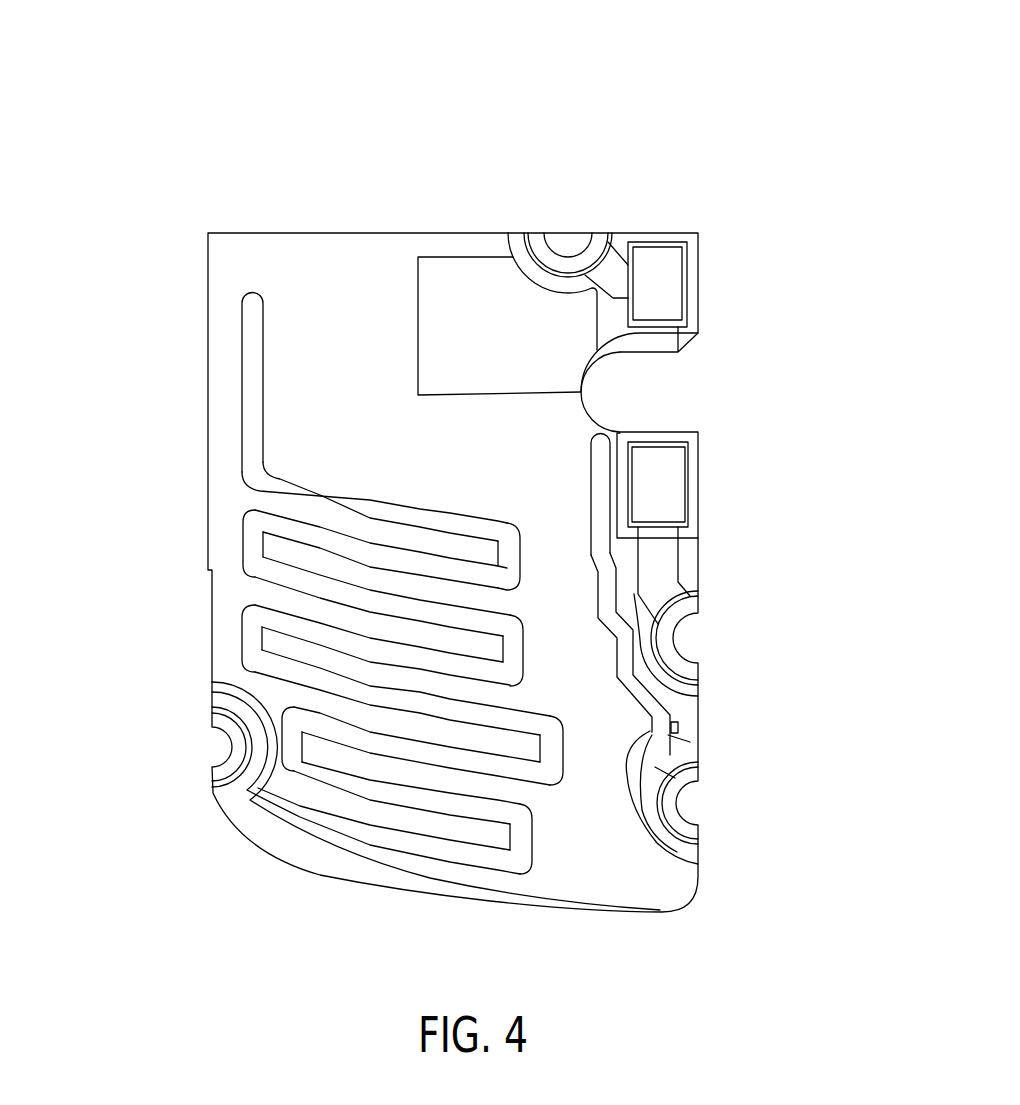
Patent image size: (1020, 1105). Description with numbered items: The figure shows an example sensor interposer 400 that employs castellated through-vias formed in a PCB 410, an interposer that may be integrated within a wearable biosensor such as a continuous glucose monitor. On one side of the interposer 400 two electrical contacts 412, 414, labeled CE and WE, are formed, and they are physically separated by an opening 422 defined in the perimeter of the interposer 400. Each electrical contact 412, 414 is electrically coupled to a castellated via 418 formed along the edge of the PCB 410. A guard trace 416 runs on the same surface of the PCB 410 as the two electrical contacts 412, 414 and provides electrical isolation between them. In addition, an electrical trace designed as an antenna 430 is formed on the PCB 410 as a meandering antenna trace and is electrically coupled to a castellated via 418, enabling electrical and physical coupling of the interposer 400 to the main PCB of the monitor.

The sensor interposer 400 is at (178, 148).
The PCB 410 is at (220, 298).
The electrical contact 412 is at (720, 283).
The electrical contact 414 is at (740, 513).
The guard trace 416 is at (683, 723).
The castellated via 418 is at (699, 638).
The opening 422 is at (682, 387).
The antenna 430 is at (197, 618).